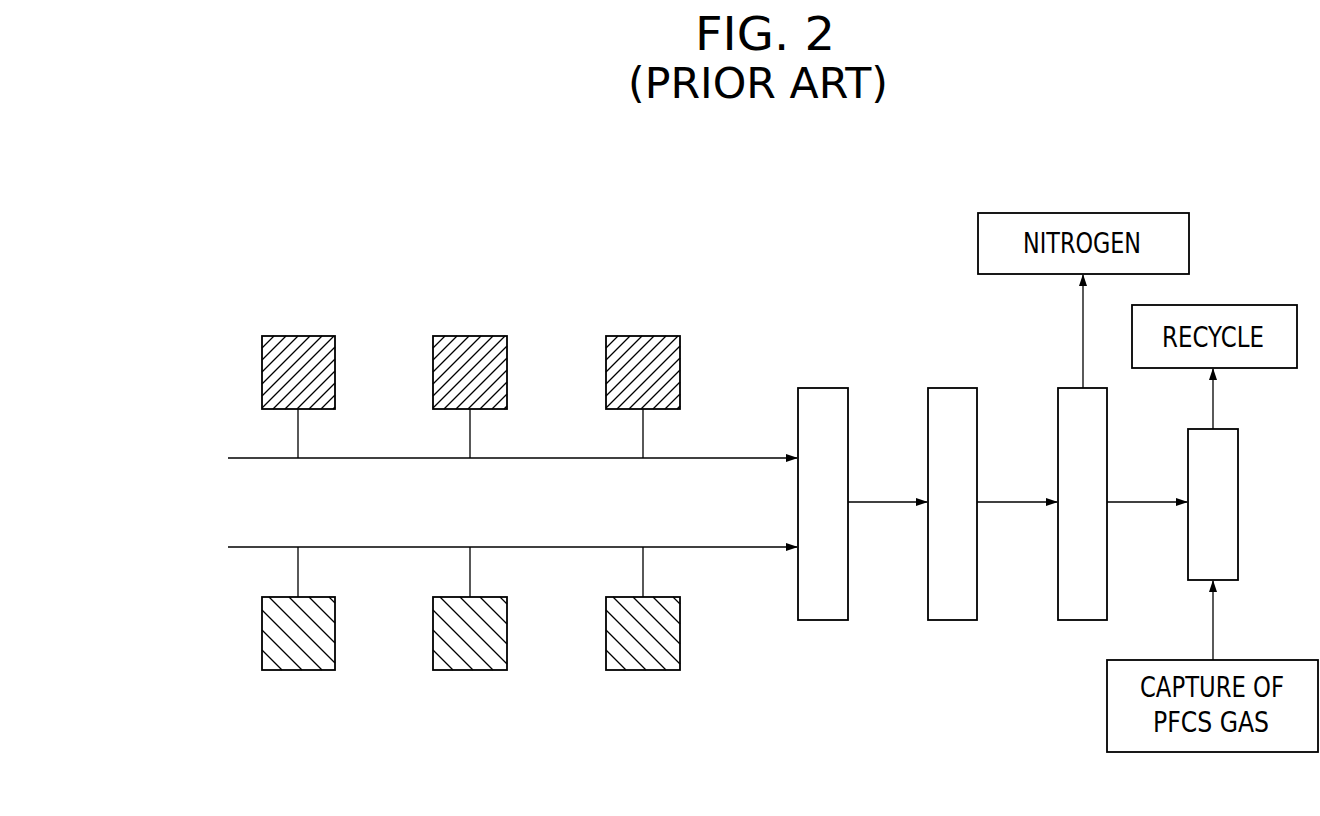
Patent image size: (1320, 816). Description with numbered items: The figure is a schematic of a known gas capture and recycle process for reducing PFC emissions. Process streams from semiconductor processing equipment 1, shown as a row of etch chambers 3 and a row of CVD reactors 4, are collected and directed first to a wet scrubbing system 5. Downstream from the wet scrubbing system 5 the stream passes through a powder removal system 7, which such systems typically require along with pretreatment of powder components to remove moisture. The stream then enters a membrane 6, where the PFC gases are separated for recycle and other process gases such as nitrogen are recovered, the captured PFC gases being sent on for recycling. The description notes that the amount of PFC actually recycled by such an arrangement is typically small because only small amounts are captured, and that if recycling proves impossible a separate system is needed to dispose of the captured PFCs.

The semiconductor process equipment 1 is at (229, 373).
The etch chambers 3 is at (306, 336).
The CVD reactors 4 is at (304, 670).
The wet scrubbing system 5 is at (820, 388).
The membrane 6 is at (1065, 620).
The powder removal system 7 is at (950, 620).